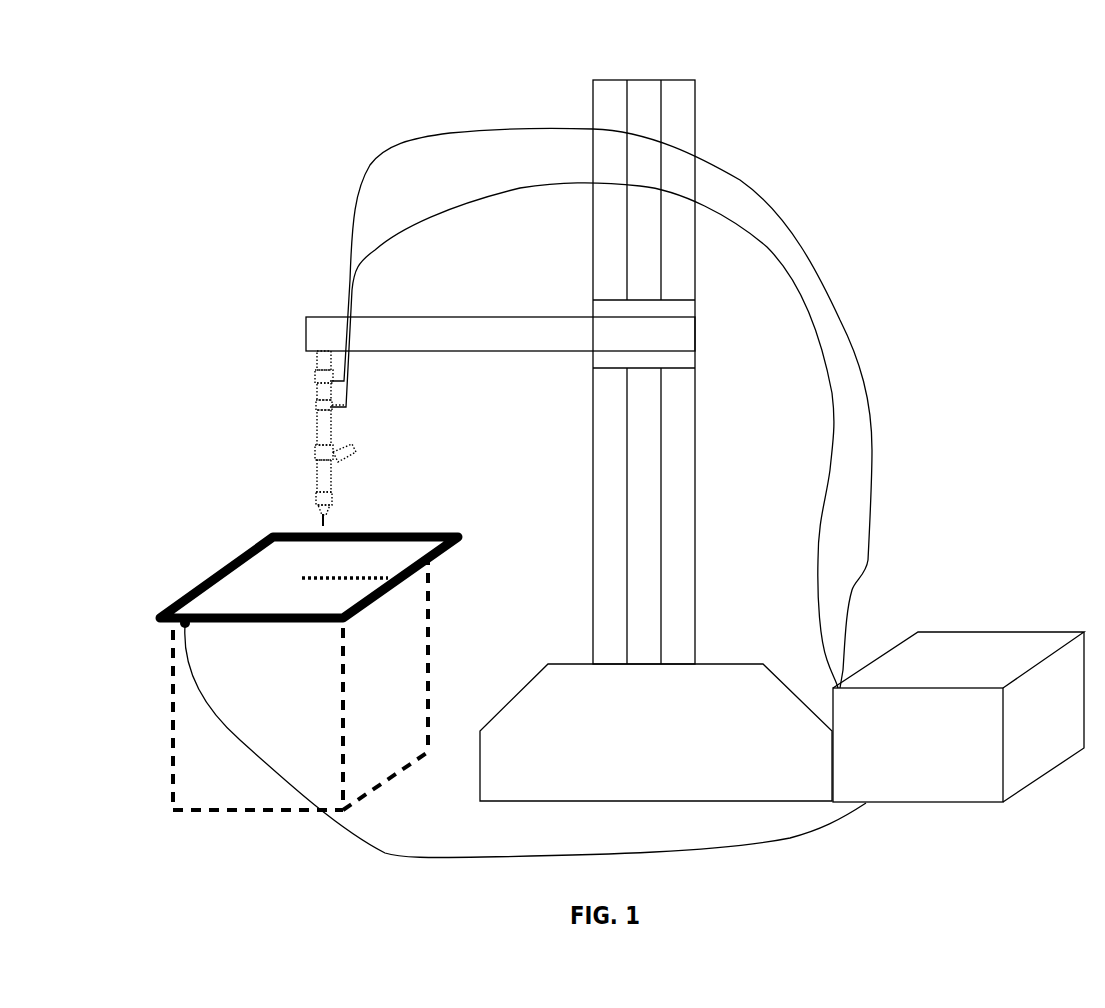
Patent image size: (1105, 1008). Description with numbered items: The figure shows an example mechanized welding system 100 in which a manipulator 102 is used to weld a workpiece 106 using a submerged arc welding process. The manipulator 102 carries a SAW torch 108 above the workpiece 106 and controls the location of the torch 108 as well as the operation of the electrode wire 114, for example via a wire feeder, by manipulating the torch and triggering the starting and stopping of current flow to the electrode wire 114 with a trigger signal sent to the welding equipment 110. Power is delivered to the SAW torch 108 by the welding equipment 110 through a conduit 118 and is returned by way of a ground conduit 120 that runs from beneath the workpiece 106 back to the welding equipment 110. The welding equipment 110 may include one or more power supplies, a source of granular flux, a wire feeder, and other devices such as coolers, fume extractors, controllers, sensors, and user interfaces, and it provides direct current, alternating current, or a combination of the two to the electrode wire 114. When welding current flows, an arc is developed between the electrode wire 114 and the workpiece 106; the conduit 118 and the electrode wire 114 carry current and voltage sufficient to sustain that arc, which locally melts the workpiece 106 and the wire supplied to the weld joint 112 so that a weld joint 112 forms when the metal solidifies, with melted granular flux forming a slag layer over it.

The mechanized welding system 100 is at (91, 128).
The manipulator 102 is at (832, 75).
The workpiece 106 is at (240, 580).
The SAW torch 108 is at (290, 350).
The welding equipment 110 is at (923, 630).
The weld joint 112 is at (372, 578).
The electrode wire 114 is at (323, 521).
The conduit 118 is at (818, 277).
The ground conduit 120 is at (385, 853).